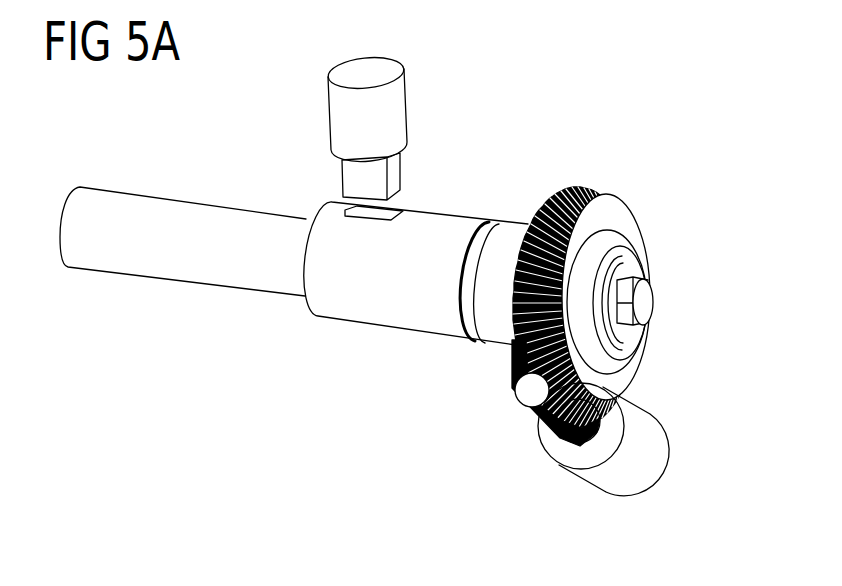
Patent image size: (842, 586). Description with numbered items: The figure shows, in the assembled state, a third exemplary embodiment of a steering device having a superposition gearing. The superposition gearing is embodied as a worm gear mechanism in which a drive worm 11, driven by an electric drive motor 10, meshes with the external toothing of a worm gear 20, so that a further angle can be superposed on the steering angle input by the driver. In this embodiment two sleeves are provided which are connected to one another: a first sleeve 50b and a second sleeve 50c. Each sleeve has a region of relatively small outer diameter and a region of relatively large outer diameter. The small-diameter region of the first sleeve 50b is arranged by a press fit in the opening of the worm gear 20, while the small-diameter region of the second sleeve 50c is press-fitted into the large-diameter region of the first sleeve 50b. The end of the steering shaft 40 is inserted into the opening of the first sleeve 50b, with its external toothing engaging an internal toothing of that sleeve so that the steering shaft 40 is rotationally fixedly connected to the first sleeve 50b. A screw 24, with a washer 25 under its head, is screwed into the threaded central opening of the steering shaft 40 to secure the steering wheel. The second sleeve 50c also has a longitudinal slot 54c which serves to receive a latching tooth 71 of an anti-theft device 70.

The drive motor 10 is at (598, 483).
The drive worm 11 is at (525, 400).
The worm gear 20 is at (617, 210).
The screw 24 is at (643, 297).
The washer 25 is at (620, 333).
The steering shaft 40 is at (195, 278).
The first sleeve 50b is at (487, 343).
The second sleeve 50c is at (385, 330).
The longitudinal slot 54c is at (387, 214).
The anti-theft device 70 is at (408, 100).
The latching tooth 71 is at (400, 167).